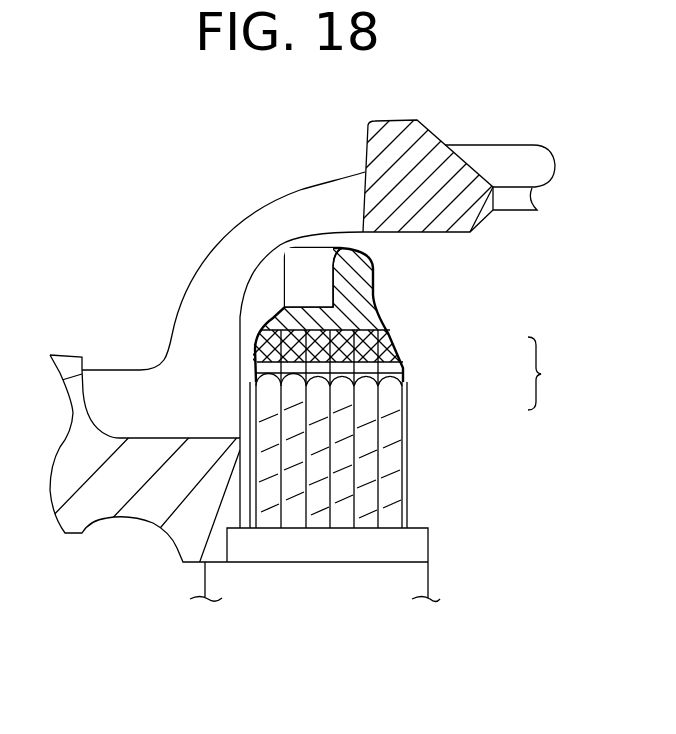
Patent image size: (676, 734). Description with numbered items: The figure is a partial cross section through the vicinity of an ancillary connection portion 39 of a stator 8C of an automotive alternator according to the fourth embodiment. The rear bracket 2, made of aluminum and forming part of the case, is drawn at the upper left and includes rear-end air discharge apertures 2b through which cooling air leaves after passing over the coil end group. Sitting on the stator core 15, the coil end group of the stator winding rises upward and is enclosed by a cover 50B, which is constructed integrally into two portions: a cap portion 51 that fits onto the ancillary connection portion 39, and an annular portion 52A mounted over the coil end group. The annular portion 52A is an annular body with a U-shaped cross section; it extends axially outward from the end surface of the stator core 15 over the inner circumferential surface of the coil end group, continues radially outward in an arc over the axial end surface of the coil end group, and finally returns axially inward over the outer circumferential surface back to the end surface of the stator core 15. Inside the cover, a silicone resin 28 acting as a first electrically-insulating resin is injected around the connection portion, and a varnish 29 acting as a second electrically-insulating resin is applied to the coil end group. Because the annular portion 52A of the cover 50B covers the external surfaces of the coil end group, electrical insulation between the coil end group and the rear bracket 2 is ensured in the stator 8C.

The rear bracket 2 is at (60, 343).
The rear-end air discharge apertures 2b is at (166, 373).
The silicone resin 28 is at (366, 279).
The ancillary connection portion 39 is at (378, 306).
The cap portion 51 is at (404, 340).
The annular portion 52A is at (404, 430).
The cover 50B is at (401, 429).
The varnish 29 is at (388, 473).
The stator 8C is at (438, 548).
The stator core 15 is at (207, 580).